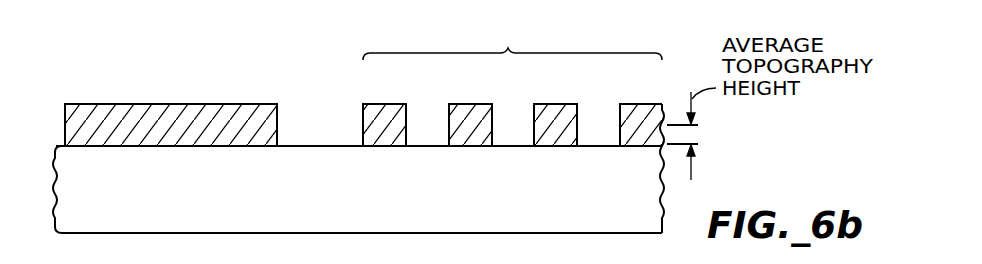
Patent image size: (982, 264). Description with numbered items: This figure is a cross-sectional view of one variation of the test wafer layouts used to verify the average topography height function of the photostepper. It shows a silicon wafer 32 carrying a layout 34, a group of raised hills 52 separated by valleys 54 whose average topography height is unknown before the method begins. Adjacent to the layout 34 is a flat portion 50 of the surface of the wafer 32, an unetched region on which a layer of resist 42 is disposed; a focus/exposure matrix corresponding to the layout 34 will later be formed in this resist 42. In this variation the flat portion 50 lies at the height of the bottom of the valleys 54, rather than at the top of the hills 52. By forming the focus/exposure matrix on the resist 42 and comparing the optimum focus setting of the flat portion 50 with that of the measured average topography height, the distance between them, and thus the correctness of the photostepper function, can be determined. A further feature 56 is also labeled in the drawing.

The silicon wafer 32 is at (652, 208).
The flat portion 50 is at (347, 145).
The layer of resist 42 is at (123, 104).
The layout 34 is at (513, 84).
The hills 52 is at (380, 104).
The valleys 54 is at (427, 144).
The topographic feature 56 is at (548, 104).